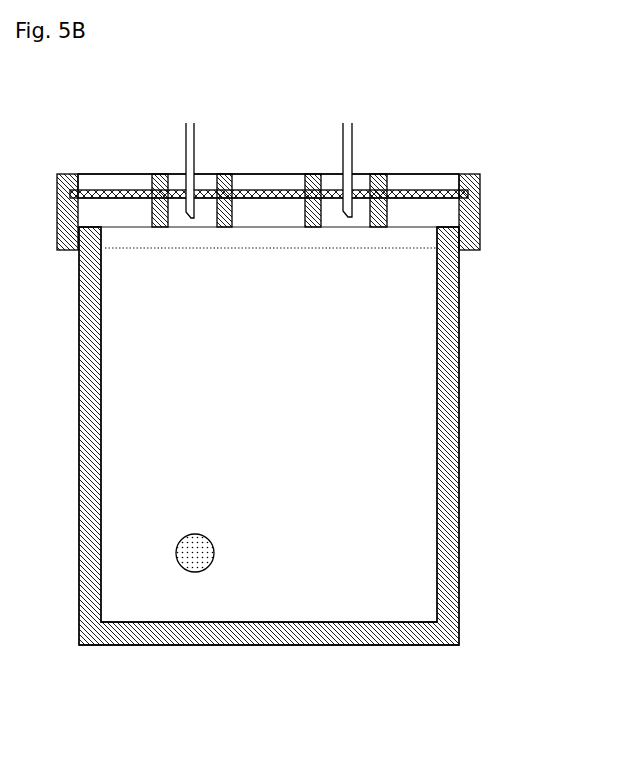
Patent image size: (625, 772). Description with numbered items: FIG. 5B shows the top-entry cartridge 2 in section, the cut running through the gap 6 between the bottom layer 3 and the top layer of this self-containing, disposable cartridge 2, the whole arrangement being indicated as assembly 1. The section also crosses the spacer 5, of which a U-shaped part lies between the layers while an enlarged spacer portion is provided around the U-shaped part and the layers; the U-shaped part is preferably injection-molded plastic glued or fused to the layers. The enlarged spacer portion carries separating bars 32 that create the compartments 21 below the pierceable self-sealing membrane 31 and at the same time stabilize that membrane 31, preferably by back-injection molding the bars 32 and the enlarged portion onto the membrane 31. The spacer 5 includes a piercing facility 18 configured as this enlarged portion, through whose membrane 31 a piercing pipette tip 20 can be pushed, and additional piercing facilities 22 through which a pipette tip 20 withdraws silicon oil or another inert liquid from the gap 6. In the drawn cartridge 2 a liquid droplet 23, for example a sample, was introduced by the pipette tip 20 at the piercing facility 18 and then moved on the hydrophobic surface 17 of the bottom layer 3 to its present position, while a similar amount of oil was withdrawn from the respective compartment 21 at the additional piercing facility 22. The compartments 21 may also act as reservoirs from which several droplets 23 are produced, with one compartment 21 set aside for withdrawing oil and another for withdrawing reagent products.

The container assembly 1 is at (45, 162).
The top-entry cartridge 2 is at (68, 658).
The spacer 5 is at (110, 212).
The gap 6 is at (235, 513).
The bottom layer 3 is at (275, 435).
The hydrophobic surface 17 is at (275, 435).
The piercing facility 18 is at (210, 173).
The piercing pipette tip 20 is at (188, 153).
The compartment 21 is at (132, 217).
The additional piercing facility 22 is at (365, 182).
The liquid droplet 23 is at (215, 553).
The pierceable self-sealing membrane 31 is at (255, 198).
The separating bars 32 is at (223, 226).